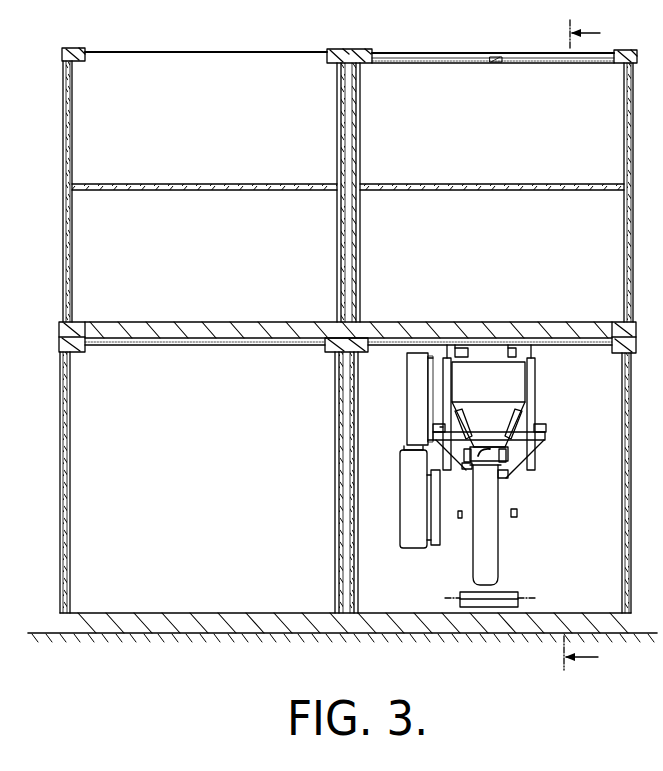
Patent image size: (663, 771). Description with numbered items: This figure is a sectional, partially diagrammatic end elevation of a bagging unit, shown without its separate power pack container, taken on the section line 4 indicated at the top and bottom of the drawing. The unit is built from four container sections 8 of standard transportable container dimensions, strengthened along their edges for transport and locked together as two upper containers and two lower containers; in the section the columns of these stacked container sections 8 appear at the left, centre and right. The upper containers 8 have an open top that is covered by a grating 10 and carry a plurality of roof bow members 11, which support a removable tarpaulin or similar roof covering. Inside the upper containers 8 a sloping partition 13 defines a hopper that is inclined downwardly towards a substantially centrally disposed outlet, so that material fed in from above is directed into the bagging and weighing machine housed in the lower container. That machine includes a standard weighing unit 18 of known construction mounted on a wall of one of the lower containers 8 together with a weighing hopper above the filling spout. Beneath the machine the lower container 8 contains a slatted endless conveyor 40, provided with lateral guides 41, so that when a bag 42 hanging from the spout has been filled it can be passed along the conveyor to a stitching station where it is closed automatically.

The section line IV-IV 4 is at (592, 346).
The container section 8 is at (103, 93).
The grating 10 is at (452, 66).
The roof bow member 11 is at (503, 52).
The sloping partition 13 is at (348, 256).
The weighing unit 18 is at (396, 501).
The slatted endless conveyor 40 is at (505, 592).
The lateral guide 41 is at (518, 512).
The bag 42 is at (493, 525).